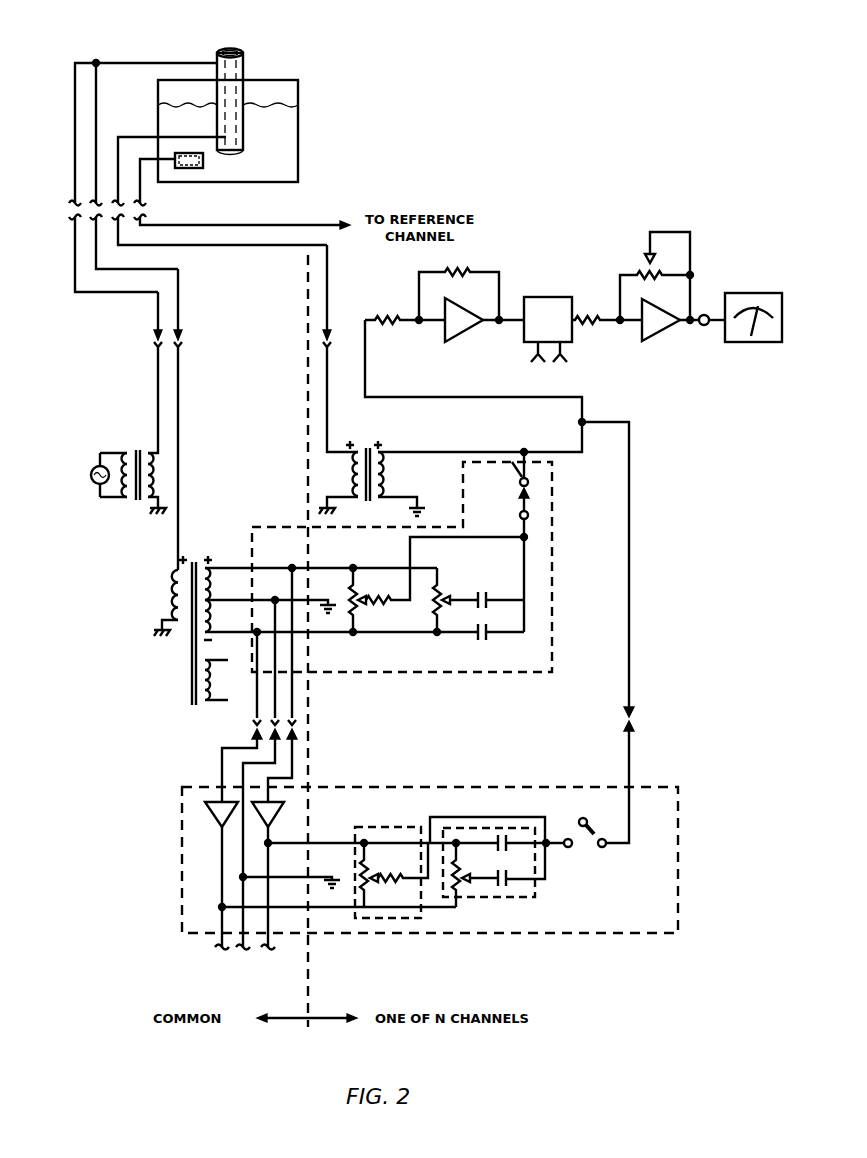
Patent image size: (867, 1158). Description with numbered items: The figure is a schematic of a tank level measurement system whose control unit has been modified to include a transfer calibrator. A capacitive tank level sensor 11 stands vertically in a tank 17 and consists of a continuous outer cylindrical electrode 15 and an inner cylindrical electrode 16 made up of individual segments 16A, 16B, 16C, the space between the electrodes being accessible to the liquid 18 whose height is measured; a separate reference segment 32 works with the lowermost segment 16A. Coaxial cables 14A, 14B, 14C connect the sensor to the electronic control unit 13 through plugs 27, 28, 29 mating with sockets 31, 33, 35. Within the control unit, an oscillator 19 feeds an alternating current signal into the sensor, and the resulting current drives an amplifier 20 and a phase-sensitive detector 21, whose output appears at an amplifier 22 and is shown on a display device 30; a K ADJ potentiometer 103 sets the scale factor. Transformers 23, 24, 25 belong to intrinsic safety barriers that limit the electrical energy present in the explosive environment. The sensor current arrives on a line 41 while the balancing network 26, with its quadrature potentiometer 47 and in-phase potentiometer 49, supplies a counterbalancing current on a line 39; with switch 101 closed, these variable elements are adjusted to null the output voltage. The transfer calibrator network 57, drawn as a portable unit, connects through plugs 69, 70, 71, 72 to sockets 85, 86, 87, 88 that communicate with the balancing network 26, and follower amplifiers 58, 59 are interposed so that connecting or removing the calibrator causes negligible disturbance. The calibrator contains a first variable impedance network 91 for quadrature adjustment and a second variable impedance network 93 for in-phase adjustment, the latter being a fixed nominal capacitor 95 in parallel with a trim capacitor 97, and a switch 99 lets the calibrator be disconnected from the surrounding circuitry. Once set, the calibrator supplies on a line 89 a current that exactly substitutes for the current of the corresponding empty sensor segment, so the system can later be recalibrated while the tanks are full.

The capacitive tank level sensor 11 is at (243, 50).
The electronic control unit 13 is at (693, 434).
The coaxial cable 14A is at (75, 84).
The coaxial cable 14B is at (98, 122).
The coaxial cable 14C is at (118, 150).
The outer cylindrical electrode 15 is at (219, 54).
The inner cylindrical electrode 16 is at (246, 59).
The sensor segment 16A is at (236, 151).
The sensor segment 16B is at (236, 119).
The sensor segment 16C is at (235, 91).
The tank 17 is at (298, 93).
The liquid 18 is at (276, 171).
The oscillator 19 is at (95, 470).
The amplifier 20 is at (485, 334).
The phase-sensitive detector 21 is at (572, 340).
The amplifier 22 is at (655, 335).
The transformer 23 is at (148, 452).
The transformer 24 is at (356, 448).
The transformer 25 is at (176, 584).
The balancing network 26 is at (497, 672).
The plug 27 is at (155, 331).
The plug 28 is at (178, 326).
The plug 29 is at (327, 330).
The display device 30 is at (742, 342).
The socket 31 is at (156, 348).
The reference segment 32 is at (185, 168).
The socket 33 is at (181, 348).
The socket 35 is at (328, 347).
The line 39 is at (512, 460).
The line 41 is at (454, 452).
The potentiometer 47 is at (368, 593).
The potentiometer 49 is at (451, 598).
The transfer calibrator network 57 is at (680, 802).
The follower amplifier 58 is at (208, 814).
The follower amplifier 59 is at (256, 818).
The plug 69 is at (252, 736).
The plug 70 is at (278, 738).
The plug 71 is at (294, 733).
The plug 72 is at (633, 732).
The socket 85 is at (252, 722).
The socket 86 is at (278, 718).
The socket 87 is at (294, 722).
The socket 88 is at (634, 714).
The line 89 is at (632, 586).
The first variable impedance network 91 is at (400, 918).
The second variable impedance network 93 is at (545, 882).
The fixed nominal capacitor 95 is at (514, 836).
The trim capacitor 97 is at (505, 890).
The switch 99 is at (600, 832).
The switch 101 is at (530, 515).
The K ADJ potentiometer 103 is at (650, 232).